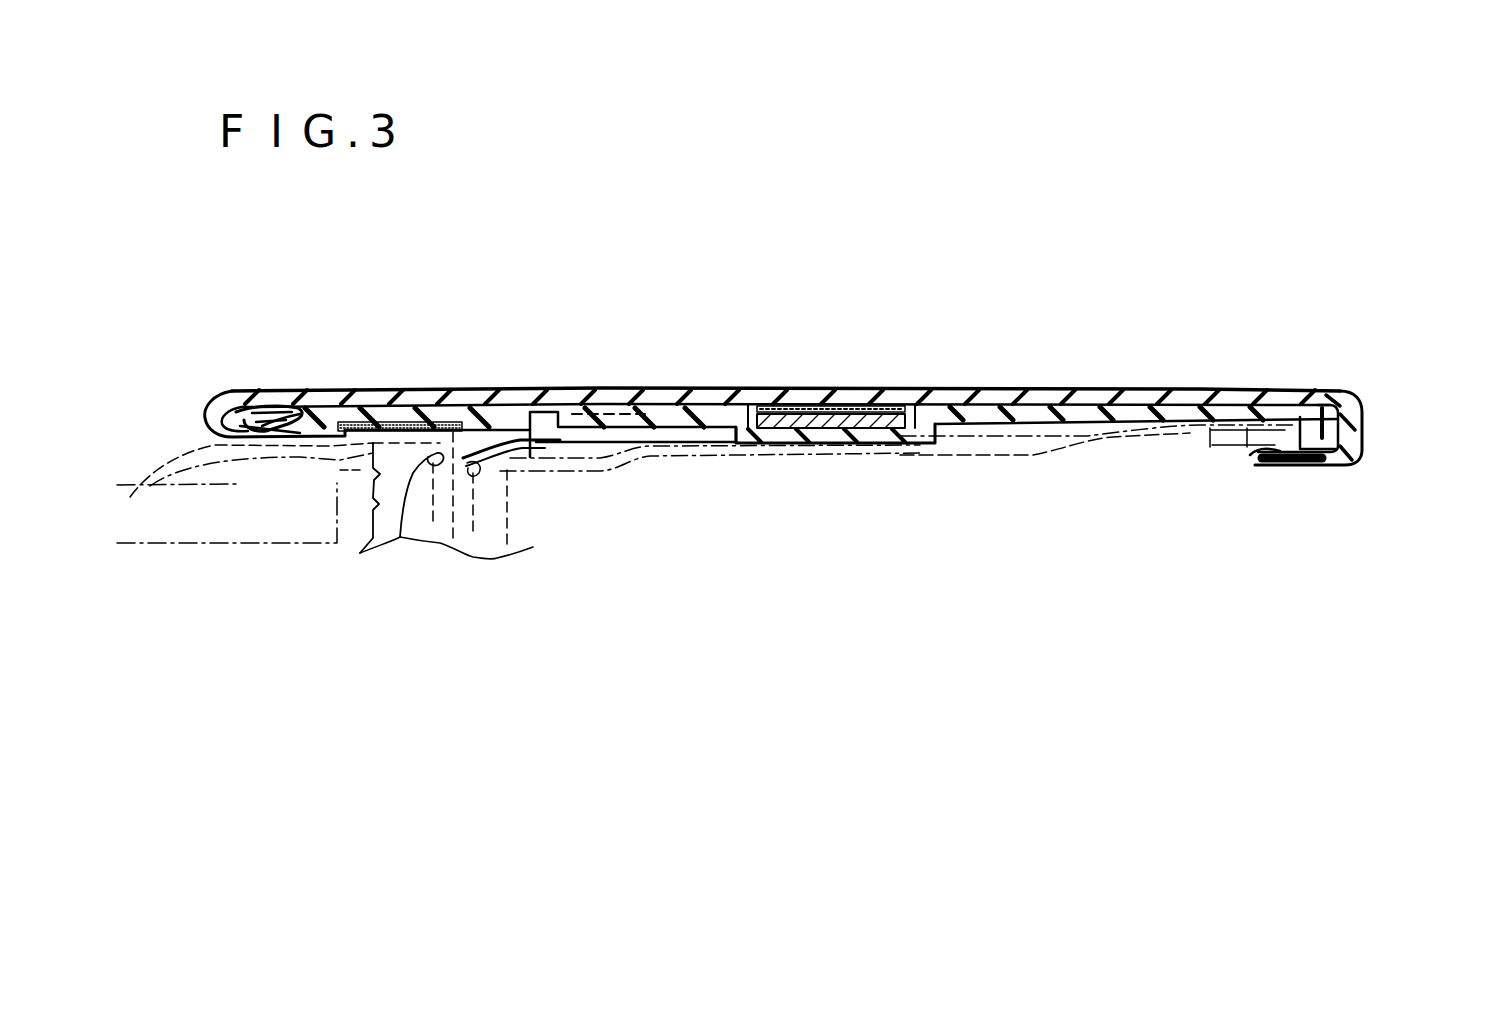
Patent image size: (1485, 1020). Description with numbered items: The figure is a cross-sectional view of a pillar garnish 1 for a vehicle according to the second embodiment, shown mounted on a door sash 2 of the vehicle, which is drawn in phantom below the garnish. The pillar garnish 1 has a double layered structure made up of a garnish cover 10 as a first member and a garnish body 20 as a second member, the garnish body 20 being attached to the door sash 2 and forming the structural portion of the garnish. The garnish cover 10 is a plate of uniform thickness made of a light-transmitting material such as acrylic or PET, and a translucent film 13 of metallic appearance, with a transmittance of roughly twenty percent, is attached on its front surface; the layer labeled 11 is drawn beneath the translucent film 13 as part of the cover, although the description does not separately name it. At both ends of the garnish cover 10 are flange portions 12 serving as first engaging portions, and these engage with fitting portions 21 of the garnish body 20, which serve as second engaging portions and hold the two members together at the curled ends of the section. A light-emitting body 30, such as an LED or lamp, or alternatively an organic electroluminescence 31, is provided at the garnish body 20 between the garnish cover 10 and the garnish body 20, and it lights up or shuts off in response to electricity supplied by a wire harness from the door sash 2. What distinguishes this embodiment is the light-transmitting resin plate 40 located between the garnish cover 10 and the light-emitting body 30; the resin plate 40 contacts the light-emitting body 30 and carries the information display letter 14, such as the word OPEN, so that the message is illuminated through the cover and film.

The pillar garnish 1 is at (794, 426).
The door sash 2 is at (552, 467).
The garnish cover 10 is at (786, 328).
The display panel 11 is at (659, 366).
The flange portion 12 is at (198, 397).
The translucent film 13 is at (578, 397).
The information display letter 14 is at (840, 415).
The garnish body 20 is at (690, 432).
The fitting portion 21 is at (266, 418).
The light-emitting body 30 is at (866, 521).
The organic electroluminescence 31 is at (850, 444).
The resin plate 40 is at (869, 346).